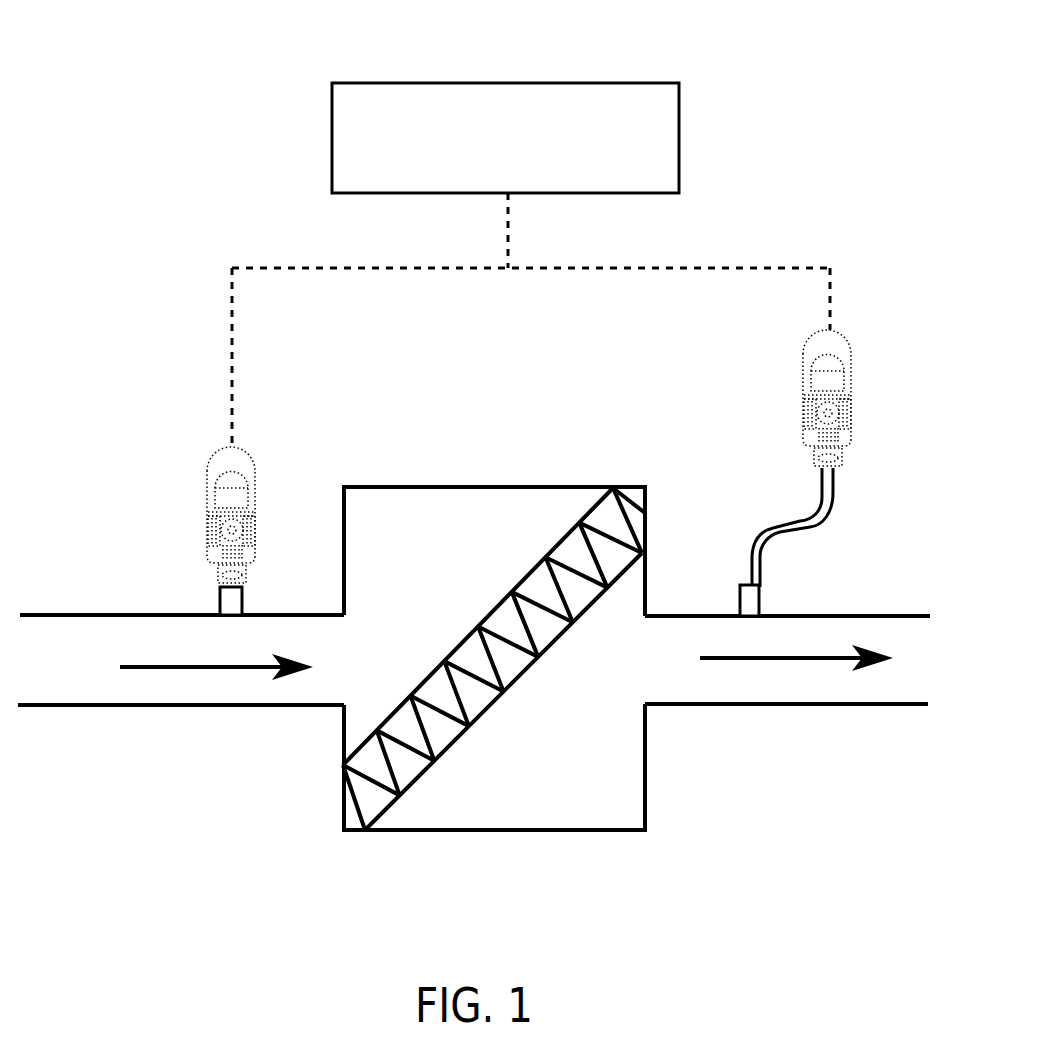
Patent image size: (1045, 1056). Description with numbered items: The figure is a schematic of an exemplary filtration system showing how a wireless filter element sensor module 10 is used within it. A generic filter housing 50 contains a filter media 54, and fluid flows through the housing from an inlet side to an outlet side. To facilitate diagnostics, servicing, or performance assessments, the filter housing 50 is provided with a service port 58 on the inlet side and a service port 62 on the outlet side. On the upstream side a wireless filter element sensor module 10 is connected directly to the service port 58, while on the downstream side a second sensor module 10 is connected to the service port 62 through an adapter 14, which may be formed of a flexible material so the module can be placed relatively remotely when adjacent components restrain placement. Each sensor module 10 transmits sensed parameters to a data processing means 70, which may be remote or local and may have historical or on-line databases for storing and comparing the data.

The wireless filter element sensor module 10 is at (226, 463).
The adapter 14 is at (813, 527).
The filter housing 50 is at (428, 487).
The filter media 54 is at (605, 520).
The service port 58 is at (220, 602).
The service port 62 is at (740, 600).
The data processing means 70 is at (332, 122).